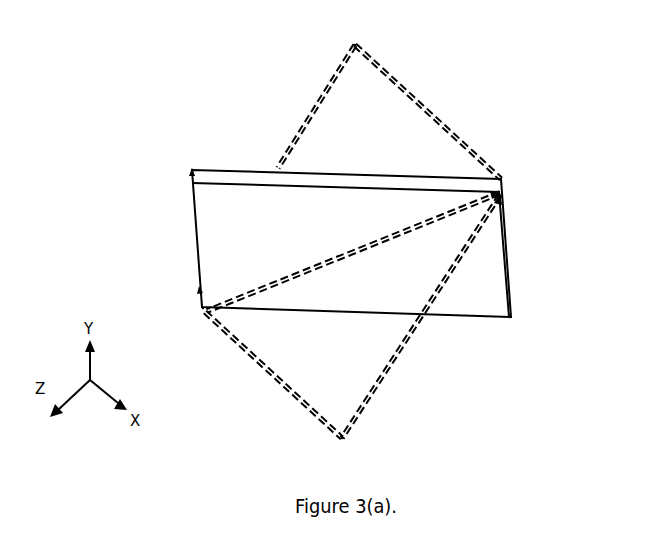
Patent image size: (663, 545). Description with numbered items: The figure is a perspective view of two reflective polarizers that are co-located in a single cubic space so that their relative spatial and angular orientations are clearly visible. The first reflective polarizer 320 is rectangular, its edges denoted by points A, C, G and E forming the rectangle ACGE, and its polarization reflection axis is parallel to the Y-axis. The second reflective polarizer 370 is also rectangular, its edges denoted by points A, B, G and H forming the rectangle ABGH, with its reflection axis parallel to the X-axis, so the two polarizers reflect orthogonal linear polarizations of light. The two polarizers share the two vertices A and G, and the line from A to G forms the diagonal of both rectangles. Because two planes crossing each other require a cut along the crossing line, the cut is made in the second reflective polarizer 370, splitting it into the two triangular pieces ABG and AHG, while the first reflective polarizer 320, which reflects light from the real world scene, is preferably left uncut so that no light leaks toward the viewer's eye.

The first Reflective Polarizer 320 is at (192, 220).
The second Reflective Polarizer 370 is at (442, 120).
The vertex H is at (345, 36).
The vertex E is at (179, 175).
The vertex G is at (512, 184).
The vertex A is at (189, 316).
The vertex C is at (515, 327).
The vertex B is at (337, 454).